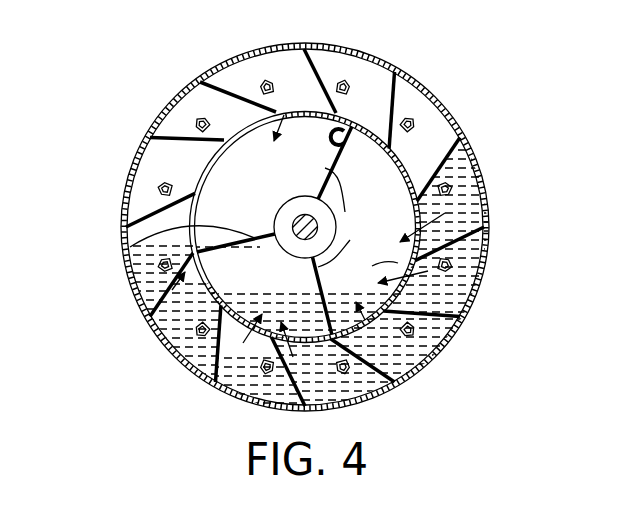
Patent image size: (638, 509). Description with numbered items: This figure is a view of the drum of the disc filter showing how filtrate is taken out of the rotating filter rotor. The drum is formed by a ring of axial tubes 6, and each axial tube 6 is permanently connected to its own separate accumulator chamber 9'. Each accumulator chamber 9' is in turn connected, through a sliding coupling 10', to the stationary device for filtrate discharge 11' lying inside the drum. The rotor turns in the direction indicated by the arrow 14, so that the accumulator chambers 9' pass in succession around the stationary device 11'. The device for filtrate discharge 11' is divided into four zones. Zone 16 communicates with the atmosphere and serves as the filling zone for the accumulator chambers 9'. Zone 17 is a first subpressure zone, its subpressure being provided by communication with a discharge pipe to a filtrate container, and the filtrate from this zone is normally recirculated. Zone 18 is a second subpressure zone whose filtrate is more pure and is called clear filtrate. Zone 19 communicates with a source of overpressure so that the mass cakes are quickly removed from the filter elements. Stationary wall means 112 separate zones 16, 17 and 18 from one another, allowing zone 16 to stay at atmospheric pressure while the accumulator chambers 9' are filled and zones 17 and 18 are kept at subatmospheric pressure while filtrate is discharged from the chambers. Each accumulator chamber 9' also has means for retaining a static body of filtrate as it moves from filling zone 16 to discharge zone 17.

The arrow 14 is at (258, 30).
The accumulator chamber 9' is at (317, 57).
The axial tube 6 is at (348, 80).
The sliding coupling 10' is at (202, 94).
The device for filtrate discharge 11' is at (457, 149).
The zone 16 is at (235, 182).
The zone 19 is at (331, 143).
The stationary wall means 112 is at (135, 245).
The zone 18 is at (478, 229).
The zone 17 is at (228, 280).